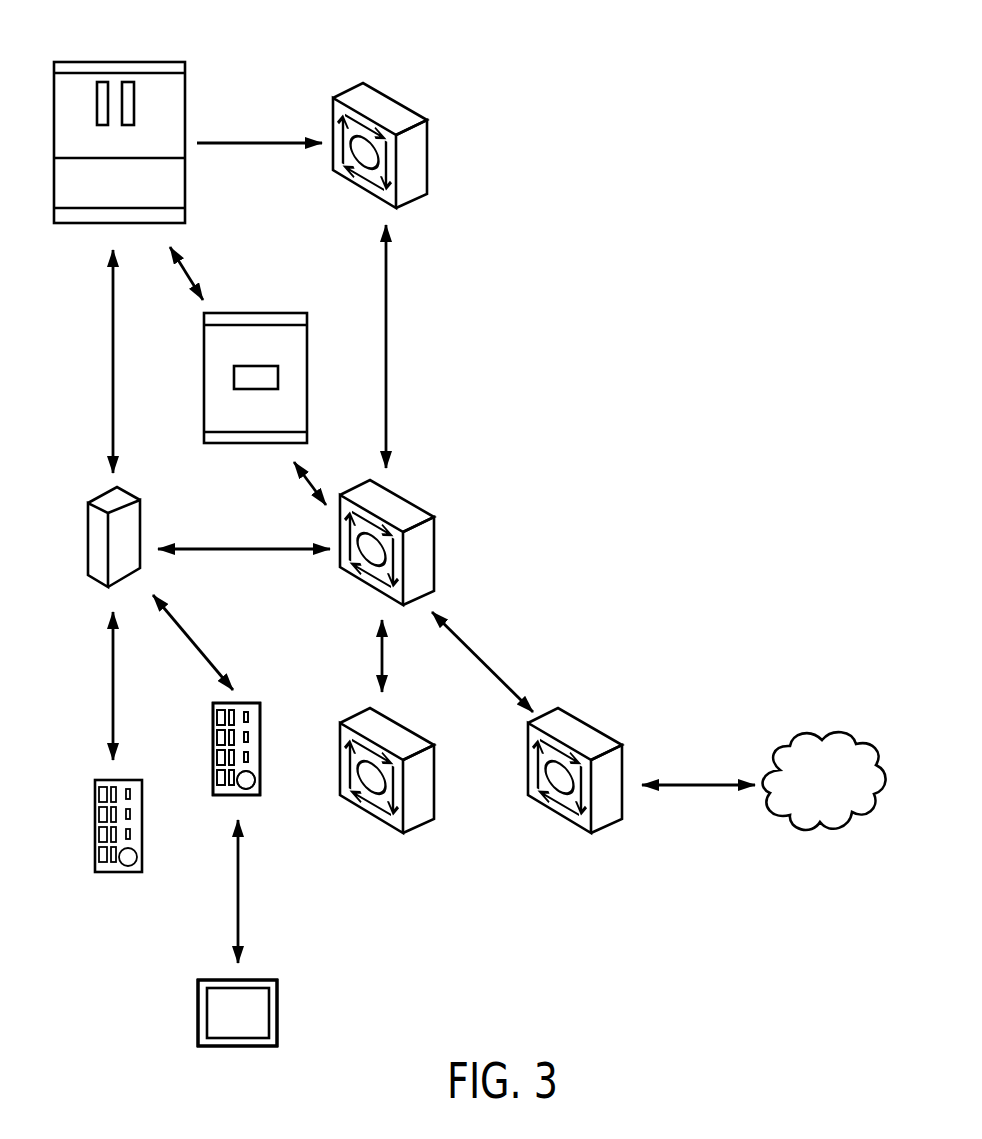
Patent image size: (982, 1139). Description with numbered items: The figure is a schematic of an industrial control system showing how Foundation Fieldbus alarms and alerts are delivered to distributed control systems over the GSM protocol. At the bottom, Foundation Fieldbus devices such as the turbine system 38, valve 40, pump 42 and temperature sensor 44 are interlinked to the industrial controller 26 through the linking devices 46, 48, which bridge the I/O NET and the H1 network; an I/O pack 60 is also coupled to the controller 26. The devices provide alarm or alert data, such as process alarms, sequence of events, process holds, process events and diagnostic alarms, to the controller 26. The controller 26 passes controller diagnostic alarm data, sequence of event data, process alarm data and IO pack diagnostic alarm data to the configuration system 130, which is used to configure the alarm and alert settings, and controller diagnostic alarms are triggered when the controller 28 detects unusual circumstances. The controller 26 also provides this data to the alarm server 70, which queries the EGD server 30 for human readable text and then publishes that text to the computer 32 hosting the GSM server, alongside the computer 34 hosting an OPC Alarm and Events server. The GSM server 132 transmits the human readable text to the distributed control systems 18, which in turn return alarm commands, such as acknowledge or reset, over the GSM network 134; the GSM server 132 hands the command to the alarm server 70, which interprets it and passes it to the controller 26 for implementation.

The configuration system 130 is at (120, 62).
The computer hosting EGD configuration server 30 is at (397, 100).
The computer executing a virtual controller 28 is at (255, 313).
The alarm server 70 is at (402, 497).
The industrial controller 26 is at (140, 520).
The linking device 46 is at (245, 703).
The linking device 48 is at (236, 749).
The I/O pack 60 is at (122, 780).
The computer hosting OPC Alarm and Events server 34 is at (395, 722).
The computer hosting GSM server 32 is at (592, 722).
The GSM server 132 is at (607, 827).
The GSM network 134 is at (677, 783).
The distributed control system 18 is at (821, 740).
The turbine system 38 is at (277, 1010).
The valve 40 is at (237, 1013).
The pump 42 is at (237, 1013).
The temperature sensor 44 is at (237, 1013).